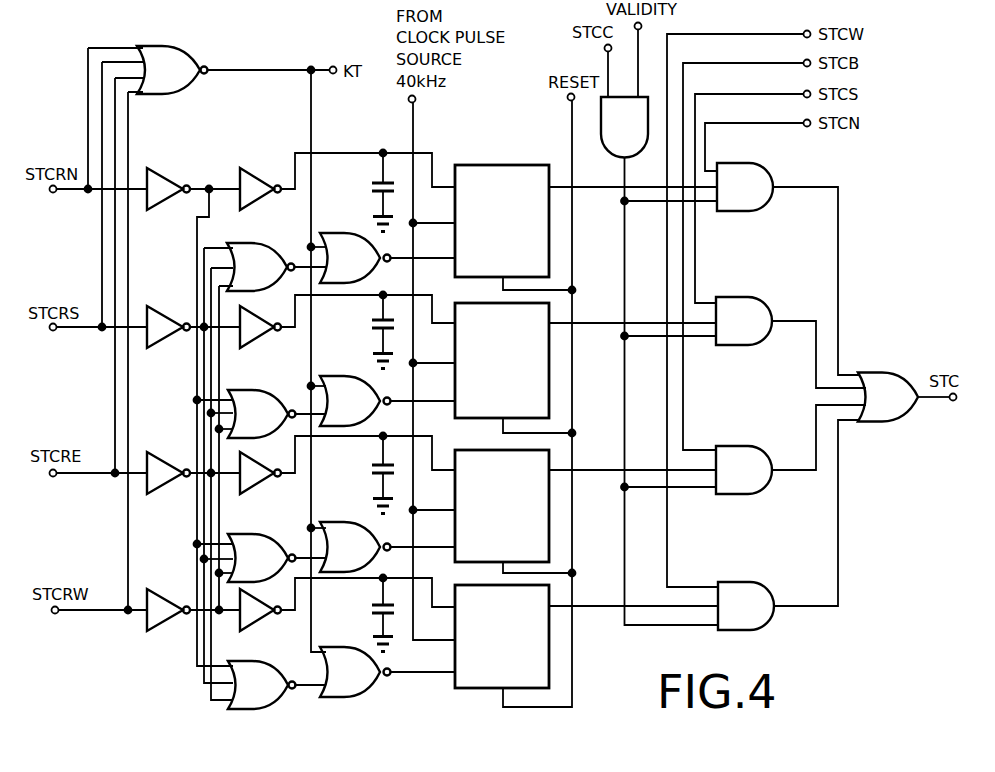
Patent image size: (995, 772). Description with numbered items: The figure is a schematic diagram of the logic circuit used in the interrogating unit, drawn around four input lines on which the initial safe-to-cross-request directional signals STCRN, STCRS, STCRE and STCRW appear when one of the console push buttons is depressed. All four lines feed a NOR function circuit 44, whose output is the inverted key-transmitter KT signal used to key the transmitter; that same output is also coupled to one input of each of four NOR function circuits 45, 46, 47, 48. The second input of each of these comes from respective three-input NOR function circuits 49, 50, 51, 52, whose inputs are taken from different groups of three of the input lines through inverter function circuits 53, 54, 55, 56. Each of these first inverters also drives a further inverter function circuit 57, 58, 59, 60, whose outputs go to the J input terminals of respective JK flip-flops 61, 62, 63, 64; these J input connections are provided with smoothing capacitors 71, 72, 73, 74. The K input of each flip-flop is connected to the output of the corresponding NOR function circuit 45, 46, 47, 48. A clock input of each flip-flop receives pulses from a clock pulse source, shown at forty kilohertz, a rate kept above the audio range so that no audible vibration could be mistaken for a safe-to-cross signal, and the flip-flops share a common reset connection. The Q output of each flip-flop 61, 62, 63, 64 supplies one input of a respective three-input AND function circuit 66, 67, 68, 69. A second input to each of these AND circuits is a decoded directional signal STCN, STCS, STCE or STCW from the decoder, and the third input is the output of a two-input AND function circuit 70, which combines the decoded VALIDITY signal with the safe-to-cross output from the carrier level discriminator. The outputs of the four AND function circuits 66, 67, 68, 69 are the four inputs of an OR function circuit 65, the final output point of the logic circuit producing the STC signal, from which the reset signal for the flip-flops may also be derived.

The NOR function circuit 44 is at (178, 48).
The NOR function circuit 45 is at (340, 236).
The NOR function circuit 46 is at (346, 378).
The NOR function circuit 47 is at (336, 524).
The NOR function circuit 48 is at (343, 648).
The NOR function circuit 49 is at (258, 245).
The NOR function circuit 50 is at (262, 392).
The NOR function circuit 51 is at (258, 536).
The NOR function circuit 52 is at (275, 707).
The inverter function circuit 53 is at (166, 176).
The inverter function circuit 54 is at (166, 314).
The inverter function circuit 55 is at (158, 460).
The inverter function circuit 56 is at (168, 594).
The inverter function circuit 57 is at (257, 176).
The inverter function circuit 58 is at (264, 333).
The inverter function circuit 59 is at (264, 479).
The inverter function circuit 60 is at (265, 617).
The JK flip-flop 61 is at (468, 165).
The JK flip-flop 62 is at (470, 303).
The JK flip-flop 63 is at (549, 527).
The JK flip-flop 64 is at (549, 673).
The OR function circuit 65 is at (889, 426).
The AND function circuit 66 is at (755, 163).
The AND function circuit 67 is at (745, 297).
The AND function circuit 68 is at (753, 446).
The AND function circuit 69 is at (755, 582).
The AND function circuit 70 is at (635, 136).
The smoothing capacitor 71 is at (371, 182).
The smoothing capacitor 72 is at (372, 320).
The smoothing capacitor 73 is at (373, 465).
The smoothing capacitor 74 is at (373, 605).